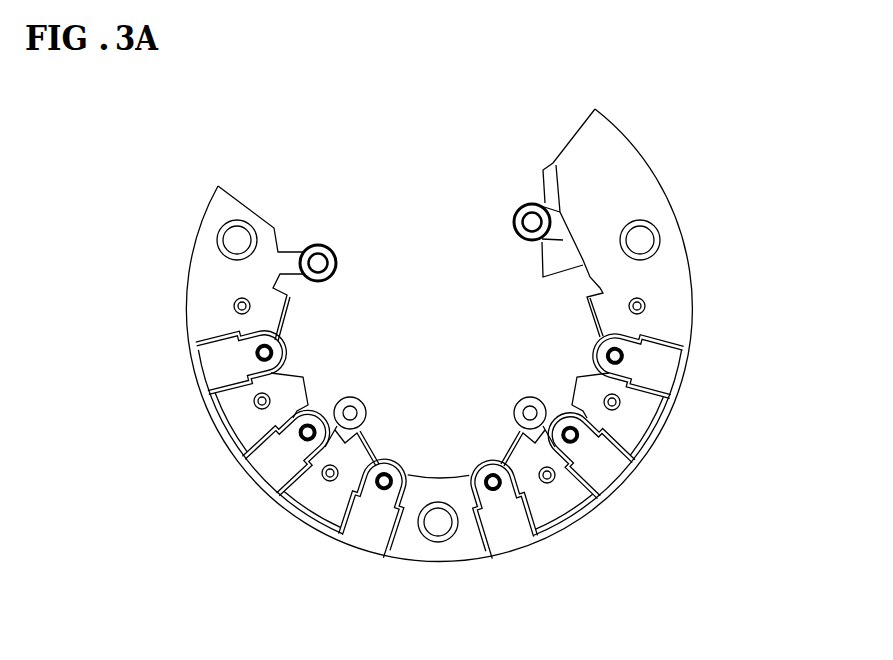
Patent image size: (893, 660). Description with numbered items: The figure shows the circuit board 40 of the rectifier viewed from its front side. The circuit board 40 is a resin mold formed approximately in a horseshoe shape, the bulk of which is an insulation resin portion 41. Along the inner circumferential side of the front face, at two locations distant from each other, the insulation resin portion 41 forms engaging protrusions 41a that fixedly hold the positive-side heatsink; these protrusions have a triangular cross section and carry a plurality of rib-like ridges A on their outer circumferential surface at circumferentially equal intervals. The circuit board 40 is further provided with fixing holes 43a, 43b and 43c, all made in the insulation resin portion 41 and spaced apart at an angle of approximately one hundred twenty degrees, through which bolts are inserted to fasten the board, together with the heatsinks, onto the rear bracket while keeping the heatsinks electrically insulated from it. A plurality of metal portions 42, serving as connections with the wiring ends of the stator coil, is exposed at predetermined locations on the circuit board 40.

The circuit board 40 is at (498, 335).
The insulation resin portion 41 is at (474, 335).
The engaging protrusion 41a is at (530, 410).
The metal portion 42 is at (765, 311).
The fixing hole 43a is at (238, 237).
The fixing hole 43b is at (440, 522).
The fixing hole 43c is at (644, 230).
The rib-like ridge A is at (352, 430).